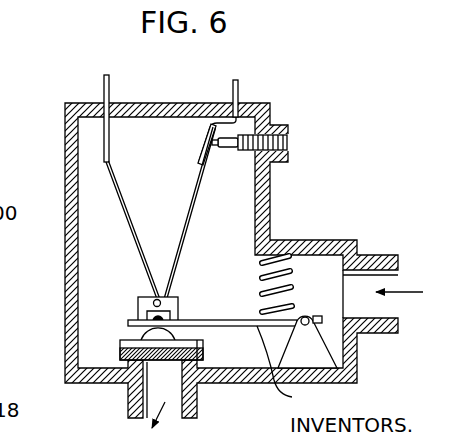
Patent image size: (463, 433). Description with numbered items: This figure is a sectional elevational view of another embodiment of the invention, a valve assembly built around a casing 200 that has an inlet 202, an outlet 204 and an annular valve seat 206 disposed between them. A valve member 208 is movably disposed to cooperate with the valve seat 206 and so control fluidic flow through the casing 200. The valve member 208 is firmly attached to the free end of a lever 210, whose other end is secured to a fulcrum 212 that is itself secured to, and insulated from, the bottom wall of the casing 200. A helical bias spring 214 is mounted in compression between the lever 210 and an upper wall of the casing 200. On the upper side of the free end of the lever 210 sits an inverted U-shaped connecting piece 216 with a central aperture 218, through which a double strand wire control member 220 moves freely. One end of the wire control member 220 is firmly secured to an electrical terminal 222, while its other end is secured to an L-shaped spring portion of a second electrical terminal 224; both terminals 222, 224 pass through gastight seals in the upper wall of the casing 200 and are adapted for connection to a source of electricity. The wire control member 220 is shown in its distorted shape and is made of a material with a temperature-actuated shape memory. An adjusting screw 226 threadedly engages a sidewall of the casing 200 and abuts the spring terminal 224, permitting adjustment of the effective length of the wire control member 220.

The casing 200 is at (65, 210).
The inlet 202 is at (401, 272).
The outlet 204 is at (148, 401).
The annular valve seat 206 is at (216, 368).
The valve member 208 is at (117, 357).
The lever 210 is at (231, 365).
The fulcrum 212 is at (316, 350).
The helical bias spring 214 is at (289, 275).
The inverted U-shaped connecting piece 216 is at (137, 307).
The central aperture 218 is at (163, 298).
The double strand wire control member 220 is at (132, 236).
The electrical terminal 222 is at (104, 133).
The electrical terminal 224 is at (197, 105).
The adjusting screw 226 is at (275, 129).